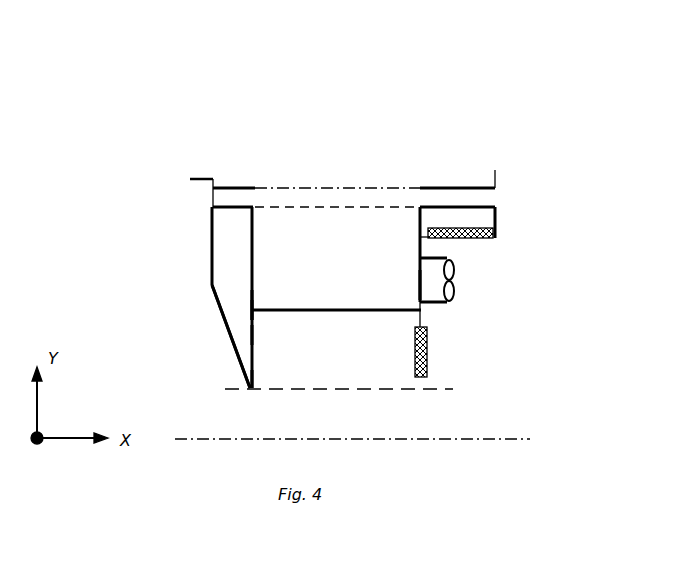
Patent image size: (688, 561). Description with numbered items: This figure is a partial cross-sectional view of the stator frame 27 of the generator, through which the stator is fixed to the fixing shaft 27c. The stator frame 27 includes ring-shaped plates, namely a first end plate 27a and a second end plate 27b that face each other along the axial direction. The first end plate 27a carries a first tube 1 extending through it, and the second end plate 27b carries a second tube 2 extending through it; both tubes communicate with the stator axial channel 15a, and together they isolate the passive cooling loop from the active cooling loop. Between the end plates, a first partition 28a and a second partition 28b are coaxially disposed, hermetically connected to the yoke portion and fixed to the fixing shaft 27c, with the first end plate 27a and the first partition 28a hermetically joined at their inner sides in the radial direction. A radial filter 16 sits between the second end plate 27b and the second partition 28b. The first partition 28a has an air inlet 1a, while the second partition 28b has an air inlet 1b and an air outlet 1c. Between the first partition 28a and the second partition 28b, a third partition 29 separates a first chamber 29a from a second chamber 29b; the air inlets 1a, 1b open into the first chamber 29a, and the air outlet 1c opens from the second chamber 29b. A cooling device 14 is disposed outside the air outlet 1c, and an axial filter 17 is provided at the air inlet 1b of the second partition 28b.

The stator frame 27 is at (338, 96).
The first tube 1 is at (225, 188).
The stator axial channel 15a is at (357, 186).
The second tube 2 is at (468, 187).
The second end plate 27b is at (503, 182).
The radial filter 16 is at (483, 230).
The first end plate 27a is at (208, 283).
The first partition 28a is at (257, 292).
The air outlet 1c is at (420, 285).
The cooling device 14 is at (456, 282).
The second partition 28b is at (428, 322).
The third partition 29 is at (343, 312).
The second chamber 29b is at (252, 310).
The air inlet 1a is at (255, 335).
The axial filter 17 is at (428, 363).
The air inlet 1b is at (470, 352).
The first chamber 29a is at (278, 382).
The fixing shaft 27c is at (407, 391).